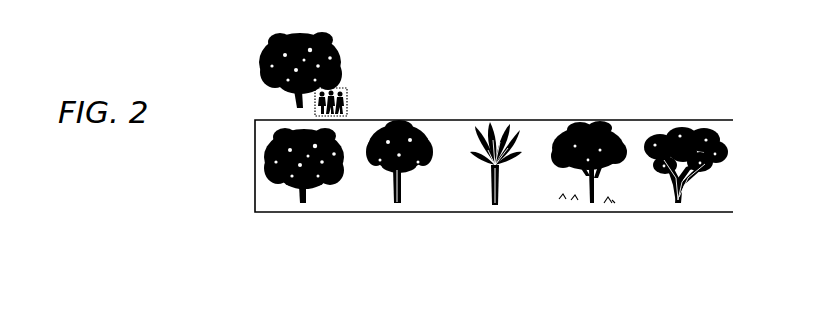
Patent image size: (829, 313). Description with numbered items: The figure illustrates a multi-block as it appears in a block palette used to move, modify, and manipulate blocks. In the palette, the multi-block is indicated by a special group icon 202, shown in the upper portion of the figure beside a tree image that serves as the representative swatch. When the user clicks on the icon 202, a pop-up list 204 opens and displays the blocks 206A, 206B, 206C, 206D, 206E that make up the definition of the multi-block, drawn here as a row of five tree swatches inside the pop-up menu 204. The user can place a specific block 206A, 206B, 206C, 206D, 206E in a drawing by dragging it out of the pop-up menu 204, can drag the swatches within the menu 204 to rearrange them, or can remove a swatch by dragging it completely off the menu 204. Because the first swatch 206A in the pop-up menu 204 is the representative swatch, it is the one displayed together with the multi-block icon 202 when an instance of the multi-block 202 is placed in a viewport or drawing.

The multi-block group icon 202 is at (348, 88).
The pop-up list 204 is at (653, 120).
The first block swatch 206A is at (312, 205).
The block swatch 206B is at (407, 205).
The block swatch 206C is at (510, 205).
The block swatch 206D is at (606, 205).
The block swatch 206E is at (692, 205).